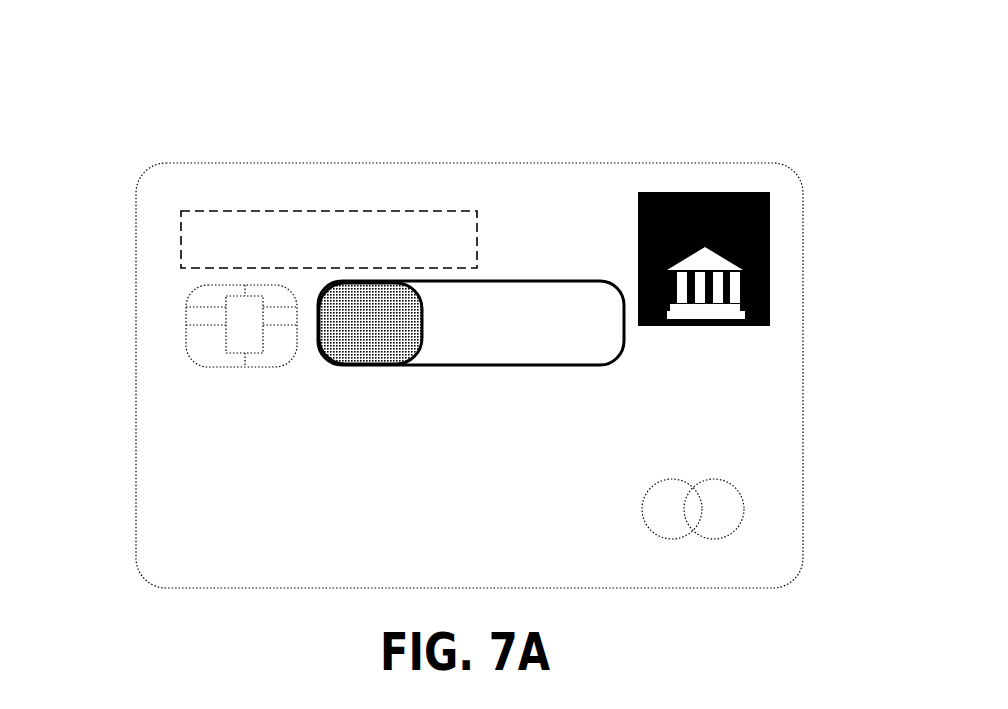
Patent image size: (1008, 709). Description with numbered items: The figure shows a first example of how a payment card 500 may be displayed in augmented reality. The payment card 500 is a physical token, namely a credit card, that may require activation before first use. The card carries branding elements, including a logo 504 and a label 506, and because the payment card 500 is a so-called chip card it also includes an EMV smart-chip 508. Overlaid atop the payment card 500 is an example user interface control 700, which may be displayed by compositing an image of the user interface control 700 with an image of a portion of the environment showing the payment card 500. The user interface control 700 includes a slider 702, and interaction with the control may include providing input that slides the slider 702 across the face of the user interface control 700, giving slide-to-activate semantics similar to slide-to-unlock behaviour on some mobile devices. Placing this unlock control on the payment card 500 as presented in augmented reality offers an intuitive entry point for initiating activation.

The payment card 500 is at (126, 140).
The logo 504 is at (716, 182).
The label 506 is at (408, 220).
The EMV smart-chip 508 is at (180, 345).
The user interface control 700 is at (487, 293).
The slider 702 is at (348, 345).